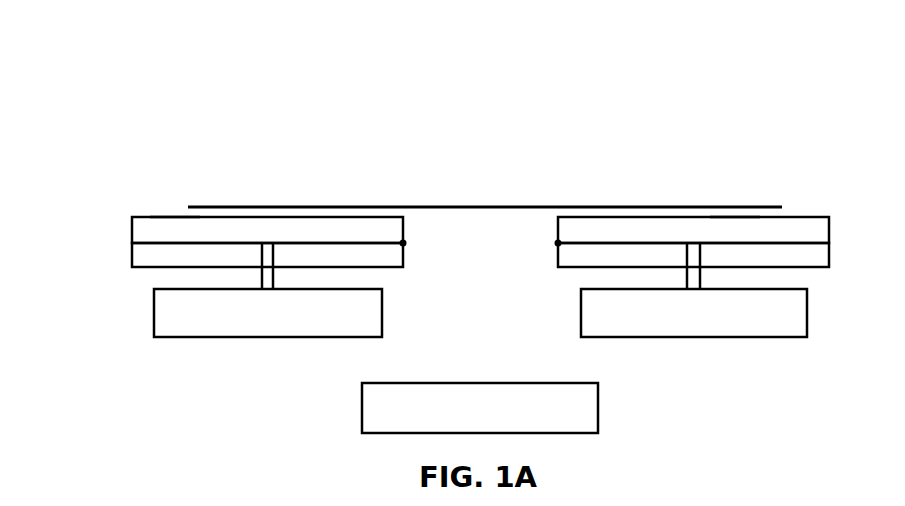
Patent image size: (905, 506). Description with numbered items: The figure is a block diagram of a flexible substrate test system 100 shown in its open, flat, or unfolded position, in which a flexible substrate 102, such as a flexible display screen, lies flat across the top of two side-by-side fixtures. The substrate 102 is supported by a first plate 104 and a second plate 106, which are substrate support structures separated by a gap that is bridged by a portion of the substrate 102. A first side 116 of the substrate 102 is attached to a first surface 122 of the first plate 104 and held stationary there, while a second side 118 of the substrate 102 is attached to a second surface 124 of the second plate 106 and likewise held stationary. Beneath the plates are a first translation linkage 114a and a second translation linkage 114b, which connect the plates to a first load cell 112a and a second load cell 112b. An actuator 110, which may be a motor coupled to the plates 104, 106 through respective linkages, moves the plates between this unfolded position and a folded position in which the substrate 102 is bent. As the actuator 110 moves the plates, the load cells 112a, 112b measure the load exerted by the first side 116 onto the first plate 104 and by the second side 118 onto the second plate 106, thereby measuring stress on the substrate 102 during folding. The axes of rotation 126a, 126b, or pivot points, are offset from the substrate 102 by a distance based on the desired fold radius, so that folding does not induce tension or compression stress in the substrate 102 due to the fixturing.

The flexible substrate test system 100 is at (112, 56).
The flexible substrate 102 is at (248, 205).
The first plate 104 is at (782, 217).
The second plate 106 is at (132, 232).
The actuator 110 is at (430, 383).
The first load cell 112a is at (747, 337).
The second load cell 112b is at (153, 327).
The first translation linkage 114a is at (798, 268).
The second translation linkage 114b is at (132, 252).
The first side 116 is at (647, 184).
The second side 118 is at (284, 180).
The first surface 122 is at (735, 217).
The second surface 124 is at (170, 217).
The first axis of rotation 126a is at (558, 243).
The second axis of rotation 126b is at (403, 243).